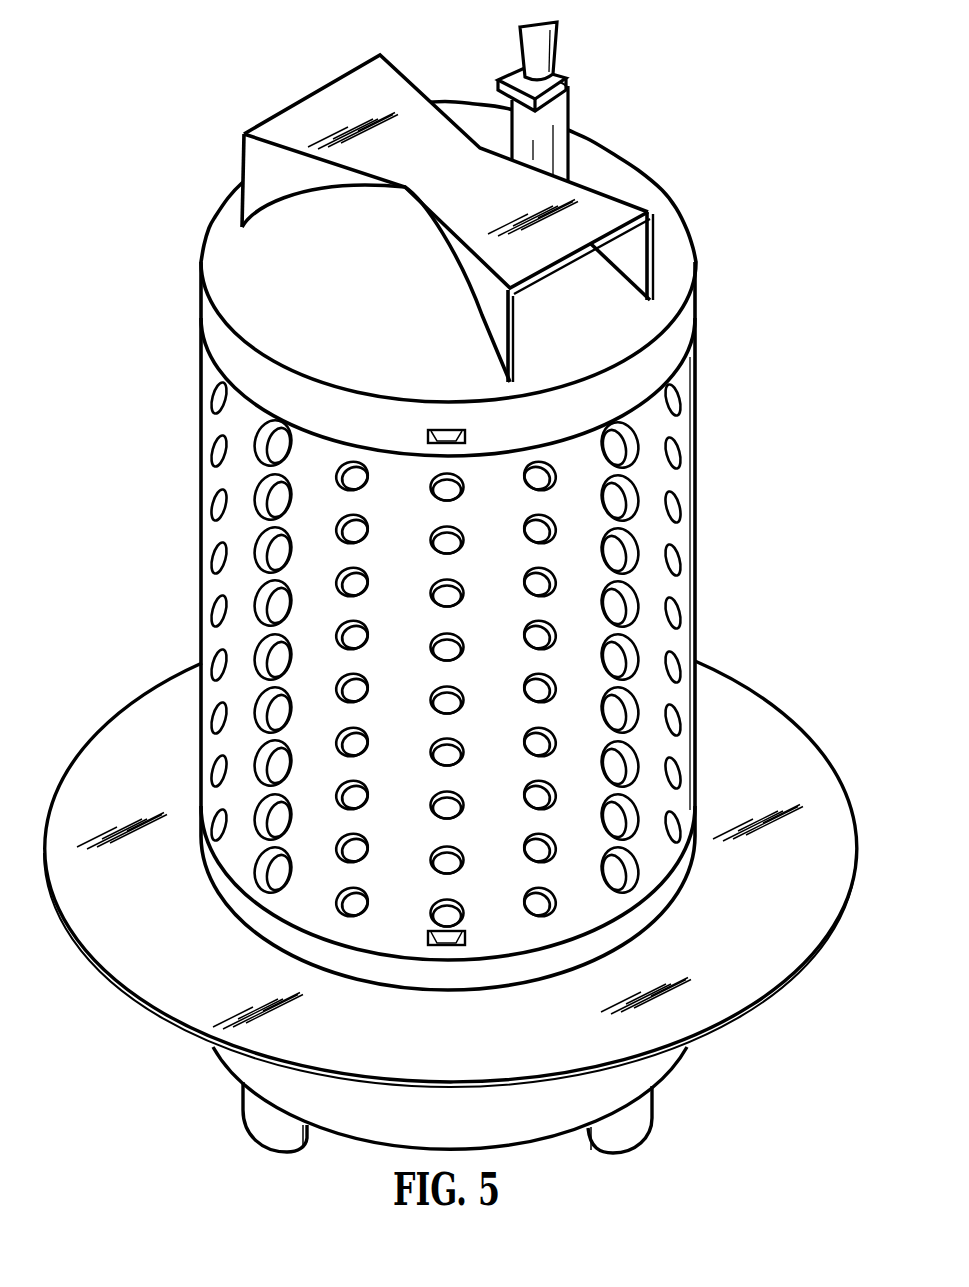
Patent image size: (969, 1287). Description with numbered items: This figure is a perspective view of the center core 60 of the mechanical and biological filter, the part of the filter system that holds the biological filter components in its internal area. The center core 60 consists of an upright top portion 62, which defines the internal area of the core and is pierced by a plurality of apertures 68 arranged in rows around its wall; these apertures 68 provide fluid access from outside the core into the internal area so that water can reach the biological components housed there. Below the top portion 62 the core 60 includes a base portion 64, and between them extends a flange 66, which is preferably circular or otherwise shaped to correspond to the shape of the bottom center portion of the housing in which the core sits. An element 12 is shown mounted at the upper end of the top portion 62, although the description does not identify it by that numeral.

The bracket 12 is at (648, 197).
The center core 60 is at (474, 626).
The top portion 62 is at (682, 368).
The base portion 64 is at (667, 1072).
The flange 66 is at (737, 988).
The apertures 68 is at (263, 540).